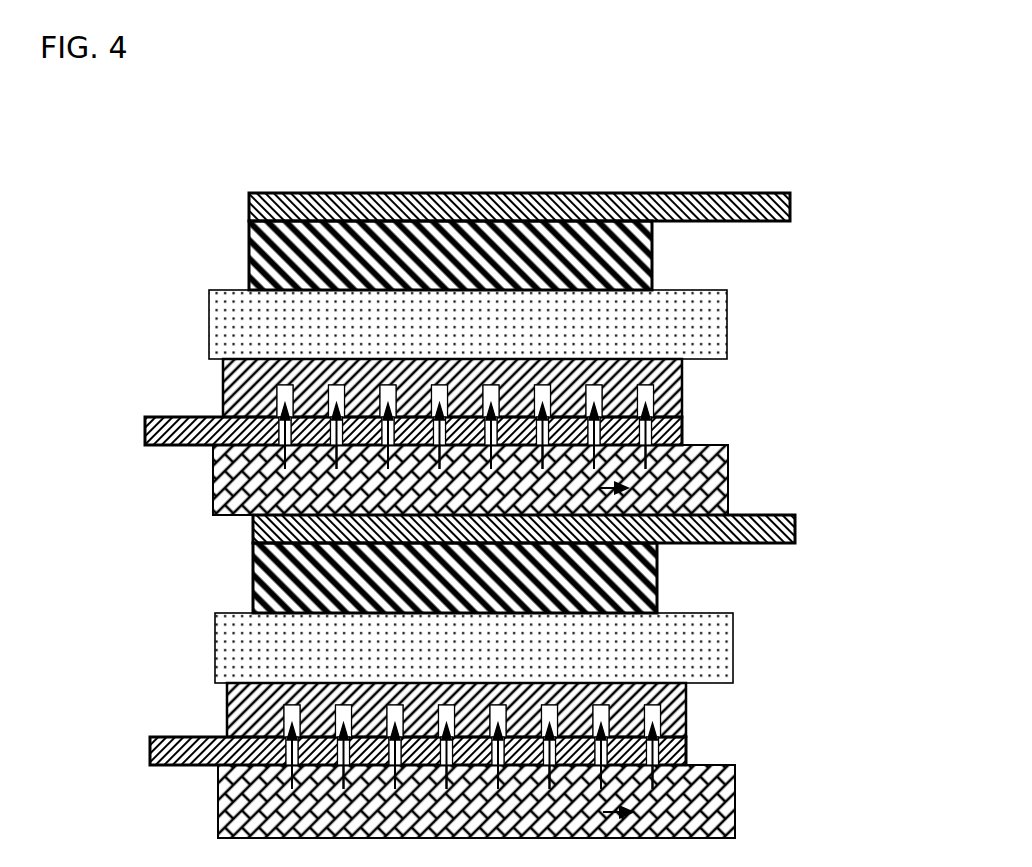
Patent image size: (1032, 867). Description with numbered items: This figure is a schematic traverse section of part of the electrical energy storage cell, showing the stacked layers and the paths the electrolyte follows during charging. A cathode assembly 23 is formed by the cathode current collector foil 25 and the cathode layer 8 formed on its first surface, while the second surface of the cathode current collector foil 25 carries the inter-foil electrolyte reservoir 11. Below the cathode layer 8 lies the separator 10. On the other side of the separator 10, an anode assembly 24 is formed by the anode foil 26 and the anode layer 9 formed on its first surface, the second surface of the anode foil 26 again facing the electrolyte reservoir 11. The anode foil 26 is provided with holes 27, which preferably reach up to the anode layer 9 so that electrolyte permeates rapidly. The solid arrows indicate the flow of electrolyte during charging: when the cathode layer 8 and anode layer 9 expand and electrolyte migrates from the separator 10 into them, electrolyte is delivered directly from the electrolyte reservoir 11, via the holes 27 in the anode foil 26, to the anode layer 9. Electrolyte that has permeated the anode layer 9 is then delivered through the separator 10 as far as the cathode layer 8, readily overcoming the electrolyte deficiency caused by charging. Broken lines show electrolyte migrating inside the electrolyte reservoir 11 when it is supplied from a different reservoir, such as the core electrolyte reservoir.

The upper electrode laminate 23 is at (113, 191).
The cathode current collector foil 25 is at (249, 210).
The cathode layer 8 is at (249, 265).
The separator 10 is at (683, 322).
The holes 27 is at (260, 390).
The anode layer 9 is at (682, 375).
The anode foil 26 is at (682, 430).
The lower electrode laminate 24 is at (842, 365).
The electrolyte reservoir 11 is at (700, 470).